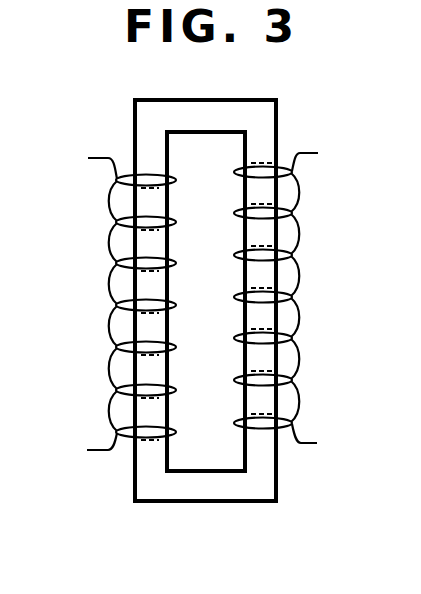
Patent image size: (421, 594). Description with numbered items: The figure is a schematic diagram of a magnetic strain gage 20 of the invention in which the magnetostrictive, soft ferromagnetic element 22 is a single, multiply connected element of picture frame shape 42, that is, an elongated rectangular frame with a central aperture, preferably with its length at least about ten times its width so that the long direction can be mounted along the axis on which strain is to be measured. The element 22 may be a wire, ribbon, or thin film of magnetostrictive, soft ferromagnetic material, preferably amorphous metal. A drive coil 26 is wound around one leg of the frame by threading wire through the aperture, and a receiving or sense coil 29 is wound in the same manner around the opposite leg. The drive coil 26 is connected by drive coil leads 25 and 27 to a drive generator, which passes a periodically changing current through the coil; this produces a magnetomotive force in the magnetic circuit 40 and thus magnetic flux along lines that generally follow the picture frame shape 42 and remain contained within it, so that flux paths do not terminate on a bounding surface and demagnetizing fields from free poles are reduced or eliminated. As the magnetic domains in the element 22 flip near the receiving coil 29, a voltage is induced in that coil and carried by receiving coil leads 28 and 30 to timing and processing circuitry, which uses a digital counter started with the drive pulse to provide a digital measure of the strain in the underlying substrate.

The magnetic strain gage 20 is at (124, 114).
The magnetostrictive, soft ferromagnetic element 22 is at (257, 97).
The drive coil lead 25 is at (106, 158).
The drive coil 26 is at (113, 272).
The drive coil lead 27 is at (103, 450).
The receiving coil lead 28 is at (310, 443).
The receiving or sense coil 29 is at (298, 273).
The receiving coil lead 30 is at (312, 153).
The magnetic circuit 40 is at (162, 518).
The picture frame shape 42 is at (235, 505).